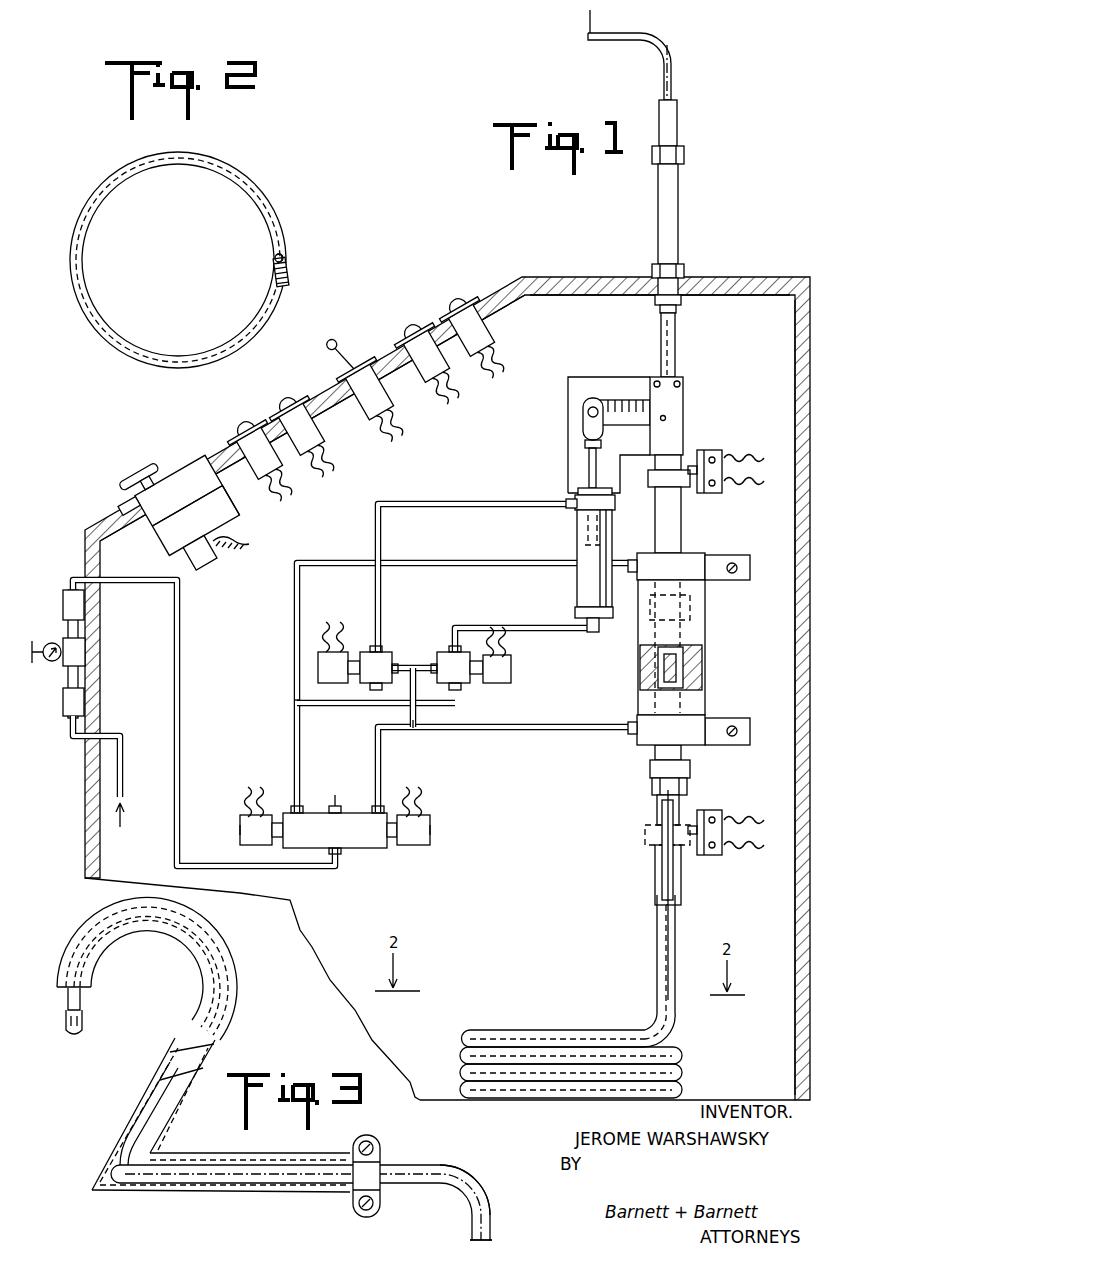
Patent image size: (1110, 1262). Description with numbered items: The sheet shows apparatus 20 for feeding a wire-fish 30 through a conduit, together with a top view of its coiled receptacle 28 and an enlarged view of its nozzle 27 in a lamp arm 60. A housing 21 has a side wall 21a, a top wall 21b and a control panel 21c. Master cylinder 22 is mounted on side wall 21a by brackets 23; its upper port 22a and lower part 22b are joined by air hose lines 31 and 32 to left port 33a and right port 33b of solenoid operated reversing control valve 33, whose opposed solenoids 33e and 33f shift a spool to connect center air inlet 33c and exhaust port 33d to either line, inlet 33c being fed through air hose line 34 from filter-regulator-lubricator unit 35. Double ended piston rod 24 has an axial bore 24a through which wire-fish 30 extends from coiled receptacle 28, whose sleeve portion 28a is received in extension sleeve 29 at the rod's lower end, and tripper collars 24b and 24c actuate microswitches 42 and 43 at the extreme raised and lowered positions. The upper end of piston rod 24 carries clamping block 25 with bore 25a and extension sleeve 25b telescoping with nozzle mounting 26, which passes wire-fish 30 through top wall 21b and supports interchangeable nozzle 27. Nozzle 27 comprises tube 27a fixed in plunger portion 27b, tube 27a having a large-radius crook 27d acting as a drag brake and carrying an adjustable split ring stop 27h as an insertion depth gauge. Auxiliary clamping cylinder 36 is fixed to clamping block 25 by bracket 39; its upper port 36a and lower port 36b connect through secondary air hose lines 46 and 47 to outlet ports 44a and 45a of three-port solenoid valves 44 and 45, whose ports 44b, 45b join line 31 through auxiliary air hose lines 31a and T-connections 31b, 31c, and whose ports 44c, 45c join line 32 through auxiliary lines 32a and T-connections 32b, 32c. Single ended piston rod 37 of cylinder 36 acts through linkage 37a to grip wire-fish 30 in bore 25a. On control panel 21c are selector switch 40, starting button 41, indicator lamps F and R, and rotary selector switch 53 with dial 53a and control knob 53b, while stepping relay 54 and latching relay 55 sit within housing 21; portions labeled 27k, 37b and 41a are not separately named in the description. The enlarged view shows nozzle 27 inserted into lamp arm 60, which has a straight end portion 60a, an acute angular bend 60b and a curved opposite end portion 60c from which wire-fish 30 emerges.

In FIG. 1, the apparatus 20 is at (563, 243).
In FIG. 1, the housing 21 is at (539, 314).
In FIG. 1, the side wall 21a is at (771, 697).
In FIG. 1, the top wall 21b is at (603, 277).
In FIG. 1, the control panel 21c is at (215, 445).
In FIG. 1, the master cylinder 22 is at (706, 633).
In FIG. 1, the upper port 22a is at (630, 558).
In FIG. 1, the lower part 22b is at (630, 740).
In FIG. 1, the brackets 23 is at (738, 558).
In FIG. 1, the piston rod 24 is at (682, 515).
In FIG. 1, the axial bore 24a is at (690, 672).
In FIG. 1, the tripper collar 24b is at (648, 484).
In FIG. 1, the tripper collar 24c is at (642, 830).
In FIG. 1, the clamping block 25 is at (683, 420).
In FIG. 1, the bore 25a is at (660, 338).
In FIG. 1, the extension sleeve 25b is at (676, 336).
In FIG. 1, the nozzle mounting 26 is at (693, 262).
In FIG. 1, the nozzle 27 is at (653, 108).
In FIG. 3, the nozzle 27 is at (499, 1214).
In FIG. 1, the tube 27a is at (673, 84).
In FIG. 3, the tube 27a is at (393, 1183).
In FIG. 1, the plunger portion 27b is at (678, 110).
In FIG. 1, the crook 27d is at (672, 48).
In FIG. 3, the crook 27d is at (468, 1178).
In FIG. 3, the split ring stop 27h is at (378, 1168).
In FIG. 1, the conduit end 27k is at (584, 42).
In FIG. 1, the coiled receptacle 28 is at (512, 1030).
In FIG. 2, the coiled receptacle 28 is at (270, 204).
In FIG. 1, the sleeve portion 28a is at (656, 965).
In FIG. 2, the sleeve portion 28a is at (290, 278).
In FIG. 1, the extension sleeve 29 is at (655, 875).
In FIG. 1, the wire-fish 30 is at (590, 22).
In FIG. 2, the wire-fish 30 is at (285, 258).
In FIG. 3, the wire-fish 30 is at (82, 1007).
In FIG. 1, the air hose line 31 is at (460, 572).
In FIG. 1, the auxiliary air hose line 31a is at (326, 712).
In FIG. 1, the T-connection 31b is at (293, 706).
In FIG. 1, the T-connection 31c is at (372, 708).
In FIG. 1, the air hose line 32 is at (522, 733).
In FIG. 1, the auxiliary air hose line 32a is at (418, 716).
In FIG. 1, the T-connection 32b is at (417, 730).
In FIG. 1, the T-connection 32c is at (413, 663).
In FIG. 1, the reversing control valve 33 is at (335, 817).
In FIG. 1, the left port 33a is at (292, 805).
In FIG. 1, the right port 33b is at (385, 805).
In FIG. 1, the center air inlet 33c is at (342, 852).
In FIG. 1, the exhaust port 33d is at (334, 790).
In FIG. 1, the solenoid 33e is at (240, 837).
In FIG. 1, the solenoid 33f is at (428, 844).
In FIG. 1, the air hose line 34 is at (311, 870).
In FIG. 1, the filter-regulator-lubricator unit 35 is at (56, 607).
In FIG. 1, the auxiliary clamping cylinder 36 is at (577, 590).
In FIG. 1, the upper port 36a is at (566, 503).
In FIG. 1, the lower port 36b is at (590, 635).
In FIG. 1, the piston rod 37 is at (588, 456).
In FIG. 1, the linkage 37a is at (582, 424).
In FIG. 1, the arm 37b is at (625, 412).
In FIG. 1, the bracket 39 is at (584, 377).
In FIG. 1, the selector switch 40 is at (345, 350).
In FIG. 1, the starting button 41 is at (293, 385).
In FIG. 1, the limit switch 41a is at (248, 414).
In FIG. 1, the microswitch 42 is at (716, 450).
In FIG. 1, the microswitch 43 is at (716, 818).
In FIG. 1, the solenoid operated valve 44 is at (371, 648).
In FIG. 1, the outlet port 44a is at (376, 649).
In FIG. 1, the port 44b is at (368, 687).
In FIG. 1, the port 44c is at (397, 660).
In FIG. 1, the solenoid operated valve 45 is at (474, 655).
In FIG. 1, the outlet port 45a is at (455, 646).
In FIG. 1, the port 45b is at (462, 688).
In FIG. 1, the port 45c is at (434, 660).
In FIG. 1, the secondary air hose line 46 is at (458, 504).
In FIG. 1, the secondary air hose line 47 is at (502, 626).
In FIG. 1, the rotary selector switch 53 is at (183, 493).
In FIG. 1, the dial 53a is at (116, 502).
In FIG. 1, the control knob 53b is at (152, 455).
In FIG. 1, the stepping relay 54 is at (205, 511).
In FIG. 1, the latching relay 55 is at (204, 544).
In FIG. 3, the lamp arm 60 is at (194, 1059).
In FIG. 3, the straight end portion 60a is at (248, 1193).
In FIG. 3, the acute angular bend 60b is at (90, 1190).
In FIG. 3, the curved opposite end portion 60c is at (84, 937).
In FIG. 1, the indicator lamp F is at (418, 325).
In FIG. 1, the indicator lamp R is at (462, 300).